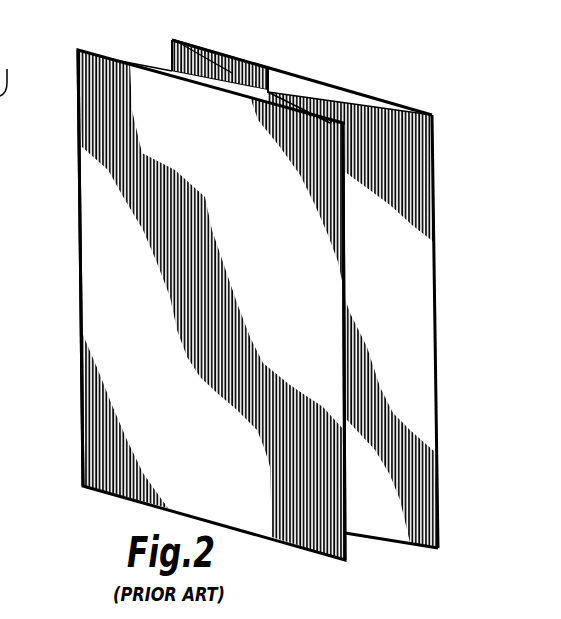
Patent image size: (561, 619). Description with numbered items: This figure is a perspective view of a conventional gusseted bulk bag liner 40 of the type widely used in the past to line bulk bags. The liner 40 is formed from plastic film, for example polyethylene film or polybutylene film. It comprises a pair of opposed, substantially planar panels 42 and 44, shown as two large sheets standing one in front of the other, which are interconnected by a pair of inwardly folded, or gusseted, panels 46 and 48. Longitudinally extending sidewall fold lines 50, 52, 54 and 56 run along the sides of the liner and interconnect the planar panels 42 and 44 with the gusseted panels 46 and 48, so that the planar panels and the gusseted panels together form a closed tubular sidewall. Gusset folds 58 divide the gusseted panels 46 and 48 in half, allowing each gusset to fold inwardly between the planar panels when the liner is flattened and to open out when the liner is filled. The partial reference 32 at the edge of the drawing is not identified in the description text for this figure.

The adjacent element (partial) 32 is at (0, 96).
The gusseted bulk bag liner 40 is at (134, 48).
The planar panel 42 is at (223, 152).
The planar panel 44 is at (325, 78).
The gusseted panel 46 is at (175, 48).
The gusseted panel 48 is at (390, 246).
The sidewall fold line 50 is at (438, 505).
The sidewall fold line 52 is at (346, 467).
The sidewall fold line 54 is at (80, 222).
The sidewall fold line 56 is at (170, 48).
The gusset fold 58 is at (266, 67).